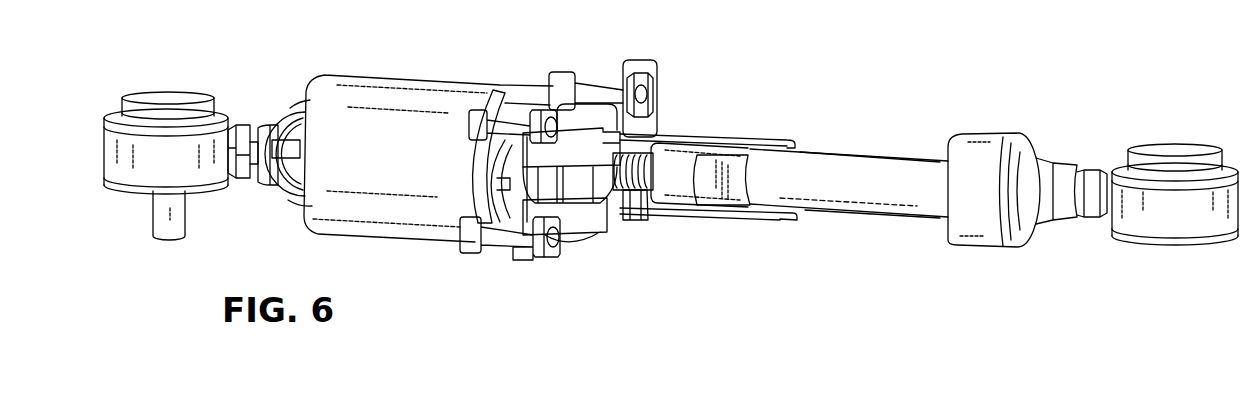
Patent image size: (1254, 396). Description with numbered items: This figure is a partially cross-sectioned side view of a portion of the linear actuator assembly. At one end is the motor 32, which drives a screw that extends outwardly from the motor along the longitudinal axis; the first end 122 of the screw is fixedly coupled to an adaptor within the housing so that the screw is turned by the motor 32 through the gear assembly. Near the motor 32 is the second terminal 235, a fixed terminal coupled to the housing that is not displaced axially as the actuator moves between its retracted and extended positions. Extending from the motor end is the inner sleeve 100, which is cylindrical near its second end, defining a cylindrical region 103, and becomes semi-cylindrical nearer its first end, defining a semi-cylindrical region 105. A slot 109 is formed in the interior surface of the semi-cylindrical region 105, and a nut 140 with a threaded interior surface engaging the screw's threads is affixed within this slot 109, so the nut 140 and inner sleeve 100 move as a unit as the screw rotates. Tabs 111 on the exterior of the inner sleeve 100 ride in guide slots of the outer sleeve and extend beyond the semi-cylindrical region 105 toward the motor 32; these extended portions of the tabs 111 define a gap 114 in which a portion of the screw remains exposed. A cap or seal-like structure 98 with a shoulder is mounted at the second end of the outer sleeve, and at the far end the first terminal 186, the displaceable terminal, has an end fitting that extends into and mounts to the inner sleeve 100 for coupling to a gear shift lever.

The motor 32 is at (392, 104).
The cap or seal-like structure 98 is at (983, 232).
The inner sleeve 100 is at (865, 197).
The cylindrical region 103 is at (920, 168).
The semi-cylindrical region 105 is at (685, 162).
The slot 109 is at (766, 140).
The tabs 111 is at (747, 158).
The gap 114 is at (640, 60).
The first end of the screw 122 is at (627, 220).
The nut 140 is at (704, 206).
The first terminal 186 is at (1178, 150).
The second terminal 235 is at (167, 93).